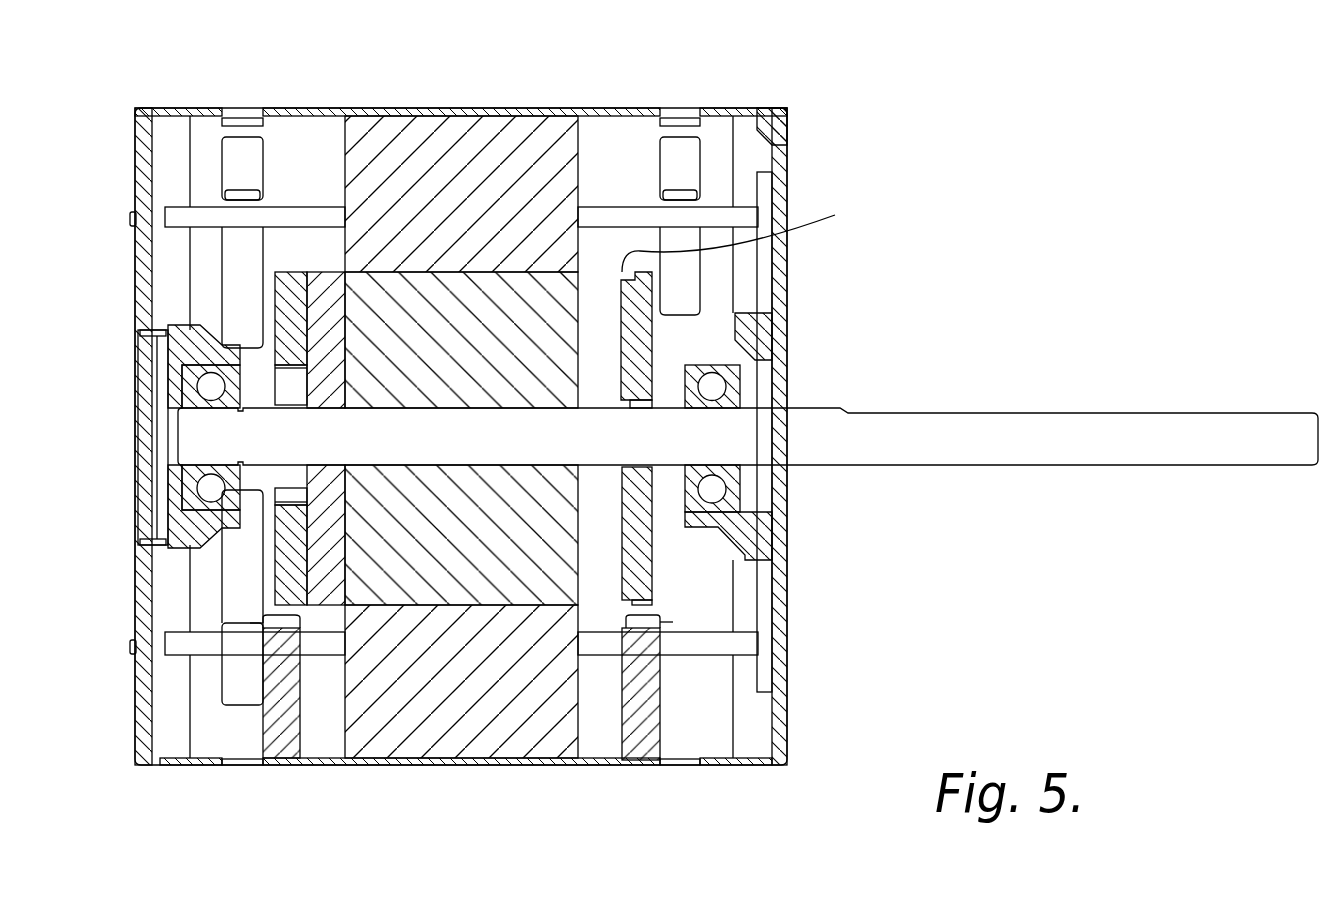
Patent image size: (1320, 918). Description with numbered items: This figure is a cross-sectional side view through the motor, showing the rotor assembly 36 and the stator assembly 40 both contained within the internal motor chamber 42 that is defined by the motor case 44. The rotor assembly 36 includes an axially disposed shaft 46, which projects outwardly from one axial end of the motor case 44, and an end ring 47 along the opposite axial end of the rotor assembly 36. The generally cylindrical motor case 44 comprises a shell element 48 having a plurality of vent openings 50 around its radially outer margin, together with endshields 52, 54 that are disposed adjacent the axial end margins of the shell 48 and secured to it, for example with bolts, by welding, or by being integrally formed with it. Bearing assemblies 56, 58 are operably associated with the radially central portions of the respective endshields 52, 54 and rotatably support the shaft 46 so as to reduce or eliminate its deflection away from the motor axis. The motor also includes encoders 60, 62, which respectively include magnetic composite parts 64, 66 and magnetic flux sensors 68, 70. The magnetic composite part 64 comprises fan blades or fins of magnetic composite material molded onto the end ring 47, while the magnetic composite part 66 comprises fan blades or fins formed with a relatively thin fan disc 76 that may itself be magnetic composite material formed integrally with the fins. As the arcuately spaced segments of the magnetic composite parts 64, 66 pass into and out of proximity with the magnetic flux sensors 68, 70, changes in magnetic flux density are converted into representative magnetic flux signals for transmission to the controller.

The rotor assembly 36 is at (428, 338).
The stator assembly 40 is at (395, 165).
The internal motor chamber 42 is at (605, 180).
The motor case 44 is at (731, 94).
The shaft 46 is at (920, 430).
The end ring 47 is at (331, 296).
The shell element 48 is at (494, 766).
The vent openings 50 is at (240, 165).
The endshield 52 is at (133, 247).
The endshield 54 is at (791, 275).
The bearing assembly 56 is at (186, 393).
The bearing assembly 58 is at (741, 492).
The encoder 60 is at (263, 590).
The encoder 62 is at (672, 602).
The magnetic composite part 64 is at (270, 326).
The magnetic composite part 66 is at (656, 353).
The magnetic flux sensor 68 is at (284, 698).
The magnetic flux sensor 70 is at (650, 708).
The fan disc 76 is at (742, 233).